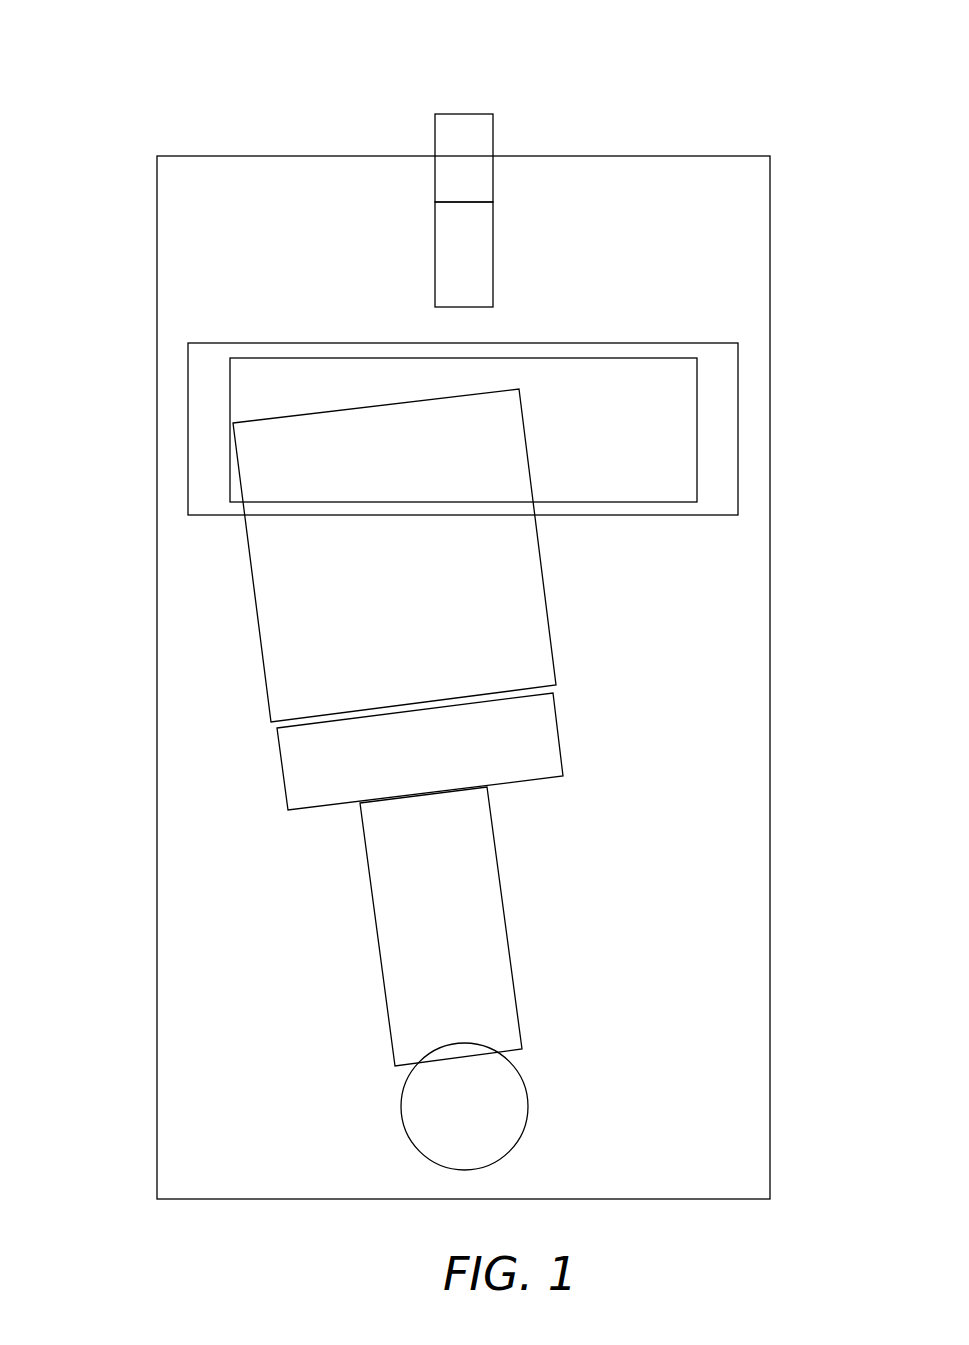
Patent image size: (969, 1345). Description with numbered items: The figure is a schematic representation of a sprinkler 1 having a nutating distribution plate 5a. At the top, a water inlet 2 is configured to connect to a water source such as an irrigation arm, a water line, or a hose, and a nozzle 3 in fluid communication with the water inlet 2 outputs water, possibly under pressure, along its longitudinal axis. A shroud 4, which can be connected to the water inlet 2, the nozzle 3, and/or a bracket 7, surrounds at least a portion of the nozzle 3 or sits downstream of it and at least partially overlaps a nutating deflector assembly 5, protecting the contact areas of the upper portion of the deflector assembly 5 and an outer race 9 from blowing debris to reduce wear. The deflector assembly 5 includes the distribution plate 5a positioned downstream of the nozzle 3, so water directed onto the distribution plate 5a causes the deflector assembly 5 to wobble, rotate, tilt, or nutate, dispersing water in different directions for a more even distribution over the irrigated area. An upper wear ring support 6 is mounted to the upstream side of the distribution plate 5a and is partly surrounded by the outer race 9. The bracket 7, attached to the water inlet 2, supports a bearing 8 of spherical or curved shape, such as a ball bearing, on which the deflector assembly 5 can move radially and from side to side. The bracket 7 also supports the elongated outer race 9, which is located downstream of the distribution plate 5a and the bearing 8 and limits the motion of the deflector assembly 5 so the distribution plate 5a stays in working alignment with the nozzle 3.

The sprinkler 1 is at (122, 61).
The water inlet 2 is at (478, 114).
The nozzle 3 is at (490, 233).
The shroud 4 is at (681, 342).
The outer race 9 is at (697, 375).
The nutating deflector assembly 5 is at (214, 822).
The distribution plate 5a is at (552, 718).
The upper wear ring support 6 is at (542, 588).
The bracket 7 is at (768, 677).
The bearing 8 is at (518, 1142).